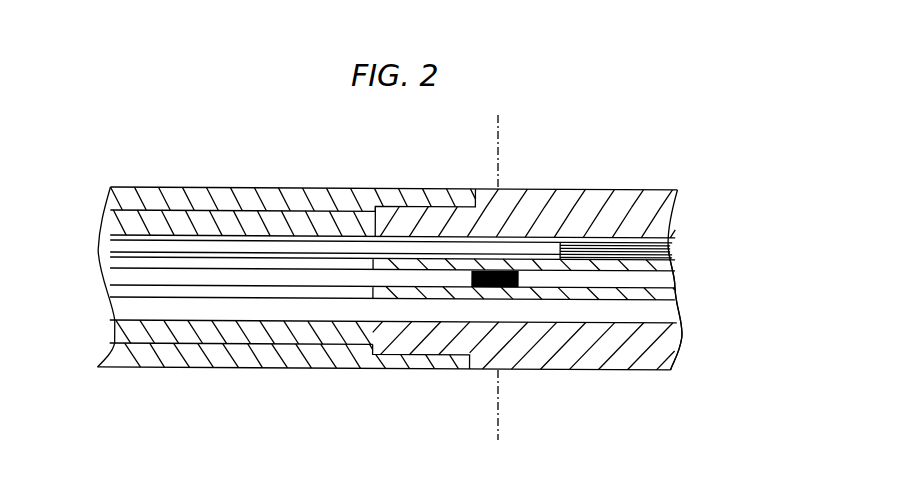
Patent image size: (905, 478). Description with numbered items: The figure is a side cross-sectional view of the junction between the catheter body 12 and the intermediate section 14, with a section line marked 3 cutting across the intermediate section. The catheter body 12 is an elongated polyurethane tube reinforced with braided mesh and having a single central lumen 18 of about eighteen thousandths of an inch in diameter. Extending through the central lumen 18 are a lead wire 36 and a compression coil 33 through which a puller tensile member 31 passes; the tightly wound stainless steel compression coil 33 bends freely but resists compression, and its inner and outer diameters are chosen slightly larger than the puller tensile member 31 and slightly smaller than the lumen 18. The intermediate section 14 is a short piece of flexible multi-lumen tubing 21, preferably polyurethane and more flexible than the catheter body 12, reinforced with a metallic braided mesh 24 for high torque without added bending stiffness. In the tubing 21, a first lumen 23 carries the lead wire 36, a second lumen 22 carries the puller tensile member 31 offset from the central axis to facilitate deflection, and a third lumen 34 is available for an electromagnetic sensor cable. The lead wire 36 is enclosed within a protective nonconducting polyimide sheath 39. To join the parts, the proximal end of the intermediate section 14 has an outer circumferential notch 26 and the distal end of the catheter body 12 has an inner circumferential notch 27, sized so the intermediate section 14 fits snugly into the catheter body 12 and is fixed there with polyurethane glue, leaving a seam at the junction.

The catheter body 12 is at (390, 217).
The central lumen 18 is at (394, 275).
The protective nonconducting sheath 39 is at (391, 241).
The outer circumferential notch 26 is at (292, 199).
The metallic braided mesh 24 is at (527, 213).
The puller tensile member 31 is at (391, 250).
The first lumen 23 is at (616, 251).
The lead wire 36 is at (392, 264).
The second lumen 22 is at (392, 292).
The compression coil 33 is at (495, 278).
The flexible multi-lumen tubing 21 is at (524, 345).
The inner circumferential notch 27 is at (297, 356).
The intermediate section 14 is at (675, 292).
The third lumen 34 is at (676, 354).
The section line 3- 3 is at (533, 440).